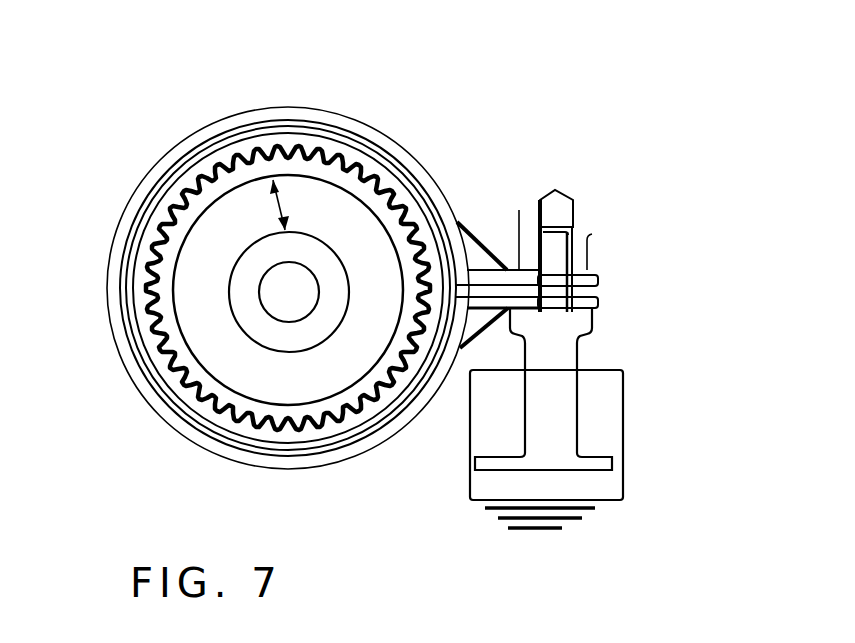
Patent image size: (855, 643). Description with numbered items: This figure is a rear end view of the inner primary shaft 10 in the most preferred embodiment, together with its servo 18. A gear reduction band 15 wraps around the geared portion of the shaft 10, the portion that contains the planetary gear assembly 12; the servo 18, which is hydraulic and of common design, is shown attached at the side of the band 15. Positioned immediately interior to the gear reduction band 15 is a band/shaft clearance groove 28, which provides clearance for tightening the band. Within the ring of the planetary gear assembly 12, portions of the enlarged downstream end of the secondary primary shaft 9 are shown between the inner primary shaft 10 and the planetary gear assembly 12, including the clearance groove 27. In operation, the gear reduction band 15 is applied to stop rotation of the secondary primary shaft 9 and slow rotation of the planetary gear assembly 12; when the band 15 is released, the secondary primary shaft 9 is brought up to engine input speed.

The clearance groove 27 is at (273, 200).
The planetary gear assembly 12 is at (314, 146).
The gear reduction band 15 is at (410, 151).
The band/shaft clearance groove 28 is at (145, 213).
The secondary primary shaft 9 is at (252, 263).
The inner primary shaft 10 is at (270, 298).
The servo 18 is at (608, 492).